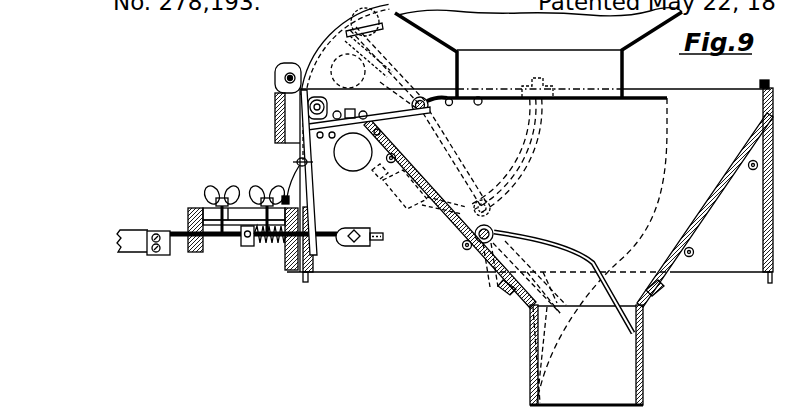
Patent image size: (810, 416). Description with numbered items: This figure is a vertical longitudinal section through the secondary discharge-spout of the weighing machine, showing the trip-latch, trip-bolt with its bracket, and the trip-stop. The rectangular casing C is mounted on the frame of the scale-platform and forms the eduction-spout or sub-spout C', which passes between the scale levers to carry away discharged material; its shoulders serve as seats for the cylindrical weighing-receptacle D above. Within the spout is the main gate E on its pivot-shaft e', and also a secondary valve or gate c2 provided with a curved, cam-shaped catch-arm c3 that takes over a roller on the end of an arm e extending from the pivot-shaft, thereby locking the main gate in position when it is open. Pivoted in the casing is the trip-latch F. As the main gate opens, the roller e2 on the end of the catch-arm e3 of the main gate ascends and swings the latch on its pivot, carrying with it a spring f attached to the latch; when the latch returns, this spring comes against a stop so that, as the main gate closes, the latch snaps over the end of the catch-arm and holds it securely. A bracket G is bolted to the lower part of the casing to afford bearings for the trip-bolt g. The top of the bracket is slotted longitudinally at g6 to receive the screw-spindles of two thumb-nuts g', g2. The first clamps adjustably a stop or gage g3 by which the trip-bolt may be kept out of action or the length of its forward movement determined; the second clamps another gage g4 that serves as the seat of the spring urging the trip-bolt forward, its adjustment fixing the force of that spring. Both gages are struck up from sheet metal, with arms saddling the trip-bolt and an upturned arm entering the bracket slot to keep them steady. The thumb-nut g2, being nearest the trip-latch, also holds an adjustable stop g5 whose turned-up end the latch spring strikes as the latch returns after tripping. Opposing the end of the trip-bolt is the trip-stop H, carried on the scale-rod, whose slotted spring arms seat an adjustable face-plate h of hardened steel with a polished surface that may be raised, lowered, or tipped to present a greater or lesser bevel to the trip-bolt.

The trip-latch F is at (333, 73).
The weighing-receptacle D is at (538, 53).
The main gate E is at (580, 104).
The casing C is at (530, 241).
The sub-spout C' is at (602, 355).
The secondary valve or gate c2 is at (563, 282).
The catch-arm c3 is at (507, 157).
The arm e is at (497, 221).
The pivot-shaft e' is at (419, 117).
The roller e2 is at (327, 106).
The catch-arm of the main gate e3 is at (369, 136).
The bracket G is at (244, 229).
The trip-bolt g is at (243, 247).
The thumb-nut g' is at (222, 198).
The thumb-nut g2 is at (262, 190).
The stop or gage g3 is at (265, 255).
The gage g4 is at (281, 250).
The adjustable stop g5 is at (291, 200).
The slot g6 is at (241, 215).
The trip-stop H is at (132, 232).
The face-plate h is at (158, 234).
The spring f is at (304, 169).